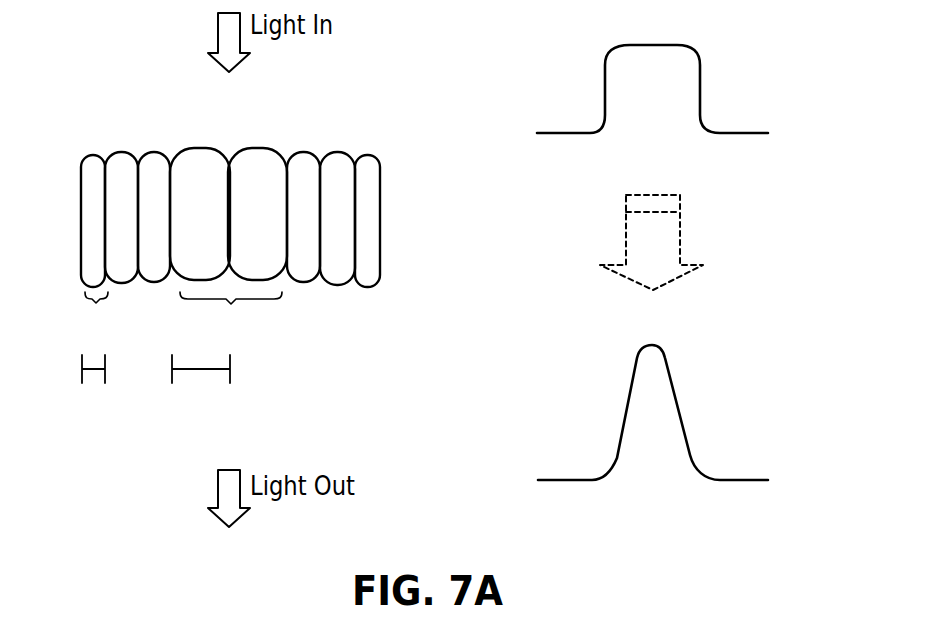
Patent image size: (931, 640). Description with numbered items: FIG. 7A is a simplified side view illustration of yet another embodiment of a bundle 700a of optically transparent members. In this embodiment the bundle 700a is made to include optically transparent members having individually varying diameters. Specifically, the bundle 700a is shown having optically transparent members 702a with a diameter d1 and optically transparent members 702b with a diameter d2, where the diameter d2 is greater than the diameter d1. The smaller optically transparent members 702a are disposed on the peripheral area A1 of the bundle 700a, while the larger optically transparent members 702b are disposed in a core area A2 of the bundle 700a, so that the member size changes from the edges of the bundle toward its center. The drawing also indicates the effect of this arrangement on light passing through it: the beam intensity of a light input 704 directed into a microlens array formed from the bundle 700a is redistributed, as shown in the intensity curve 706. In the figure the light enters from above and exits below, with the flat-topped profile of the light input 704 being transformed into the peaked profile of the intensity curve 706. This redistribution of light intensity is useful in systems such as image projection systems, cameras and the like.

The bundle 700a is at (352, 121).
The optically transparent members 702a is at (93, 155).
The optically transparent members 702b is at (202, 147).
The light input 704 is at (700, 83).
The intensity curve 706 is at (677, 397).
The peripheral area A1 is at (95, 314).
The core area A2 is at (231, 314).
The diameter d1 is at (92, 369).
The diameter d2 is at (197, 369).